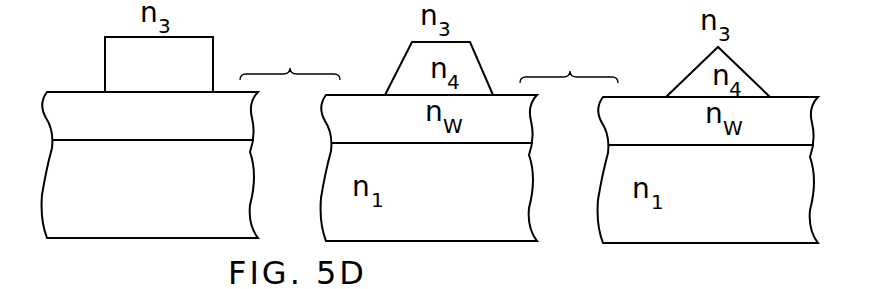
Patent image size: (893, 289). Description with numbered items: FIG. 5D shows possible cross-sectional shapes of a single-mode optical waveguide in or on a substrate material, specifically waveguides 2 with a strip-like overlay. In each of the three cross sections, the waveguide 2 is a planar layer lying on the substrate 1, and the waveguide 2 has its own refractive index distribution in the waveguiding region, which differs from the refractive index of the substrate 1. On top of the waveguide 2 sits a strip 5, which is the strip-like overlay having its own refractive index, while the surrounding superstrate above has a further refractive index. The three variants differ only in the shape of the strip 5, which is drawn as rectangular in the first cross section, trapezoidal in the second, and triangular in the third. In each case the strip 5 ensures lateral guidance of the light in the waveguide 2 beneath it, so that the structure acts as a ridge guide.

The substrate 1 is at (129, 221).
The waveguide 2 is at (93, 108).
The strip 5 is at (203, 53).